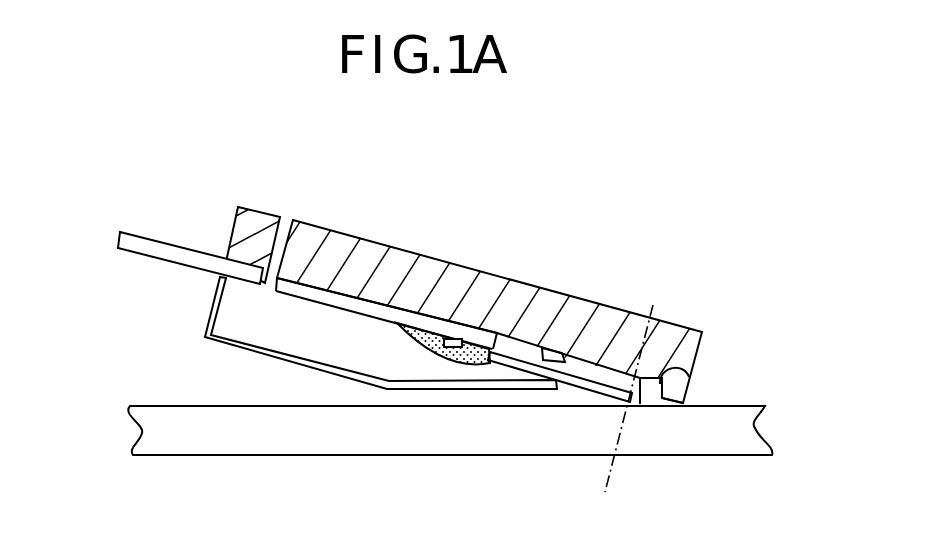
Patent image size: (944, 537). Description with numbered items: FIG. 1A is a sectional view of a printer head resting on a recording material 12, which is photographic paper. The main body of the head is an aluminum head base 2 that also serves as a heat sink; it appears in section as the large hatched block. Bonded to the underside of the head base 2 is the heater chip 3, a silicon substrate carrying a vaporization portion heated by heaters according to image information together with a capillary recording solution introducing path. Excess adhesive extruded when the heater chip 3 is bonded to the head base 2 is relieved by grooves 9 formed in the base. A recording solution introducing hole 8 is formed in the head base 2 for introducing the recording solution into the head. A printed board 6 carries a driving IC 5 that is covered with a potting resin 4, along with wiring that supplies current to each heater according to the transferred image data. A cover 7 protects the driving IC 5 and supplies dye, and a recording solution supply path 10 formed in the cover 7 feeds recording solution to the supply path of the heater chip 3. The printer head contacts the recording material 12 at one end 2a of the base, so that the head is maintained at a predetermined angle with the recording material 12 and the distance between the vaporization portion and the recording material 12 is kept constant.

The head base 2 is at (527, 297).
The one end of the base 2a is at (708, 392).
The heater chip 3 is at (580, 382).
The potting resin 4 is at (423, 337).
The driving IC 5 is at (453, 350).
The printed board 6 is at (387, 314).
The cover 7 is at (197, 345).
The recording solution introducing hole 8 is at (283, 228).
The grooves 9 is at (580, 353).
The recording solution supply path 10 is at (297, 340).
The recording material 12 is at (743, 432).